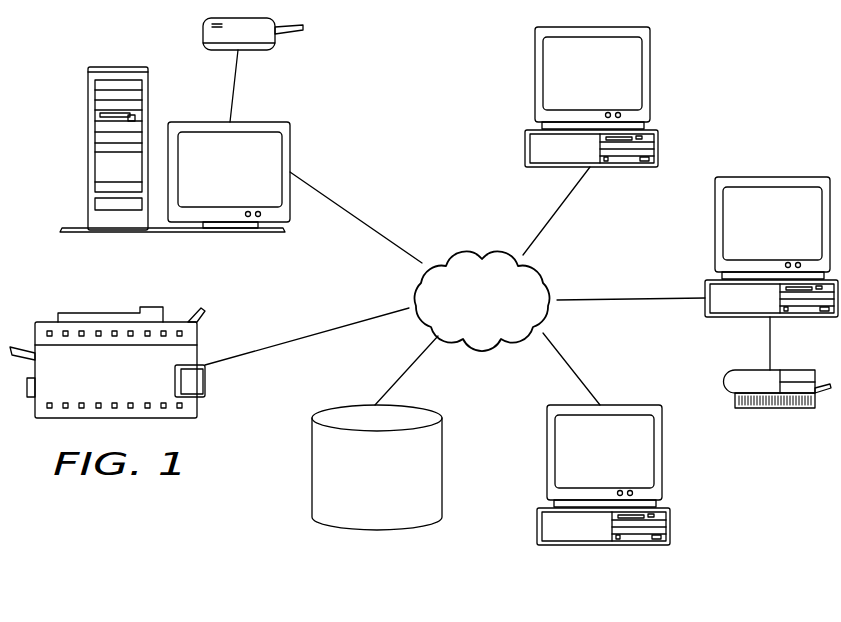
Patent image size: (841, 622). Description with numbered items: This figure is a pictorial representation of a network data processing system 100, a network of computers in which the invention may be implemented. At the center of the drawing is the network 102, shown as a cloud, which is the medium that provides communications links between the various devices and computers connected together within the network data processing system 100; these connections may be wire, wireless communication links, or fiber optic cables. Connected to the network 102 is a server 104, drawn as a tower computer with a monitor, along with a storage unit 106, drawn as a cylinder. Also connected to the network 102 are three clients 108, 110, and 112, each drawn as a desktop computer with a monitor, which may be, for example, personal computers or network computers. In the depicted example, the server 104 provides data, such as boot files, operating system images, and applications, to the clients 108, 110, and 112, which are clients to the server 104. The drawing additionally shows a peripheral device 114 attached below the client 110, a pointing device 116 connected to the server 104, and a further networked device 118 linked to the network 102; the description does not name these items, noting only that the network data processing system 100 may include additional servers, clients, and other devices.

The network data processing system 100 is at (762, 96).
The network 102 is at (464, 312).
The server 104 is at (210, 176).
The storage unit 106 is at (357, 491).
The client 108 is at (571, 84).
The client 110 is at (771, 247).
The client 112 is at (603, 475).
The scanner 114 is at (768, 408).
The mouse 116 is at (203, 30).
The network device 118 is at (90, 385).